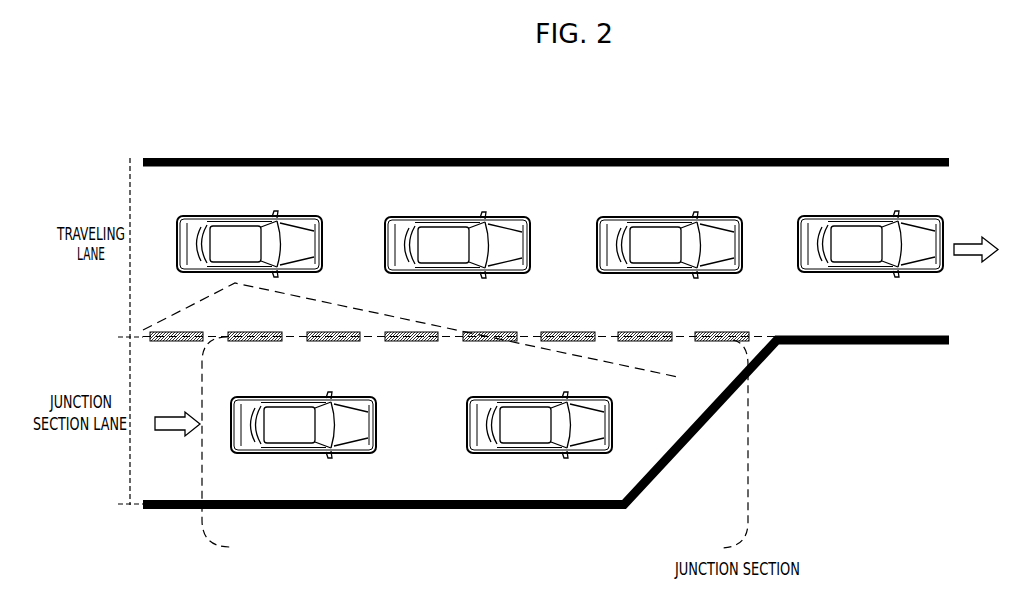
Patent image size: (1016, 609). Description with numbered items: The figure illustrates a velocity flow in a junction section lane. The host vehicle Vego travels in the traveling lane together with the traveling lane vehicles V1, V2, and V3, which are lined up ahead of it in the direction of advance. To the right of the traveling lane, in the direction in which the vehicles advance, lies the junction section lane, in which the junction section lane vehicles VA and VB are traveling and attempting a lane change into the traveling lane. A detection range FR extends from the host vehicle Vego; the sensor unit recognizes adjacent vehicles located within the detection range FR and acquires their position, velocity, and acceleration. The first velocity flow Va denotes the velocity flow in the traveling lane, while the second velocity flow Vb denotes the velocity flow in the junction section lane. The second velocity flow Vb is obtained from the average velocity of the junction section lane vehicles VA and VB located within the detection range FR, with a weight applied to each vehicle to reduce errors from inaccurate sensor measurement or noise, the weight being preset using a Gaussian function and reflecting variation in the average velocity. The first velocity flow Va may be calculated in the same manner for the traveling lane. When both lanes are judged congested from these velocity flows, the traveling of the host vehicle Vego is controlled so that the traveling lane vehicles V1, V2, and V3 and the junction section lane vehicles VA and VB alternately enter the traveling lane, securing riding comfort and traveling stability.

The host vehicle Vego is at (249, 244).
The traveling lane vehicle V1 is at (457, 245).
The traveling lane vehicle V2 is at (669, 245).
The traveling lane vehicle V3 is at (870, 244).
The junction section lane vehicle VA is at (303, 425).
The junction section lane vehicle VB is at (539, 425).
The first velocity flow Va is at (976, 259).
The second velocity flow Vb is at (177, 432).
The detection range FR is at (251, 286).